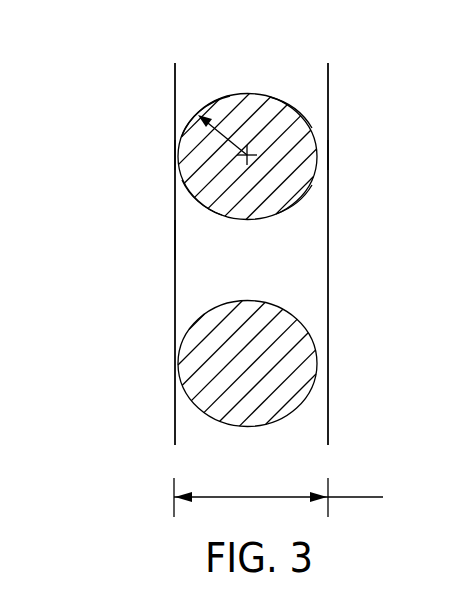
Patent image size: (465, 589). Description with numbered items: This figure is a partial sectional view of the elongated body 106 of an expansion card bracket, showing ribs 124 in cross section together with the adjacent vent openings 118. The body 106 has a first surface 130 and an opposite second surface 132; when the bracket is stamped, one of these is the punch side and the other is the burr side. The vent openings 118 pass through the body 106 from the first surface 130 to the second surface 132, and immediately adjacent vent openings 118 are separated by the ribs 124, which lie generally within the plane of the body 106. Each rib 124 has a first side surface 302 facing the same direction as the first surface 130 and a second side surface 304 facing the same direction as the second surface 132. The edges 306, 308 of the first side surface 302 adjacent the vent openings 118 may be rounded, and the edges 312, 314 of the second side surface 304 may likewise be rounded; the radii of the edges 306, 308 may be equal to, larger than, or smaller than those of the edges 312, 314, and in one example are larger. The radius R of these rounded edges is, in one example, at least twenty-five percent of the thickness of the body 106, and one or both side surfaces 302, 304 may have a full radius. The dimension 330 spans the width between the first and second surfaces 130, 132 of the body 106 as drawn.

The body 106 is at (168, 240).
The vent openings 118 is at (290, 283).
The ribs 124 is at (297, 150).
The first surface 130 is at (173, 93).
The second surface 132 is at (330, 92).
The first side surface 302 is at (170, 152).
The second side surface 304 is at (330, 153).
The edge of first side surface 306 is at (193, 202).
The edge of first side surface 308 is at (197, 118).
The edge of second side surface 312 is at (308, 120).
The edge of second side surface 314 is at (299, 199).
The channel width 330 is at (305, 497).
The radius R is at (247, 153).